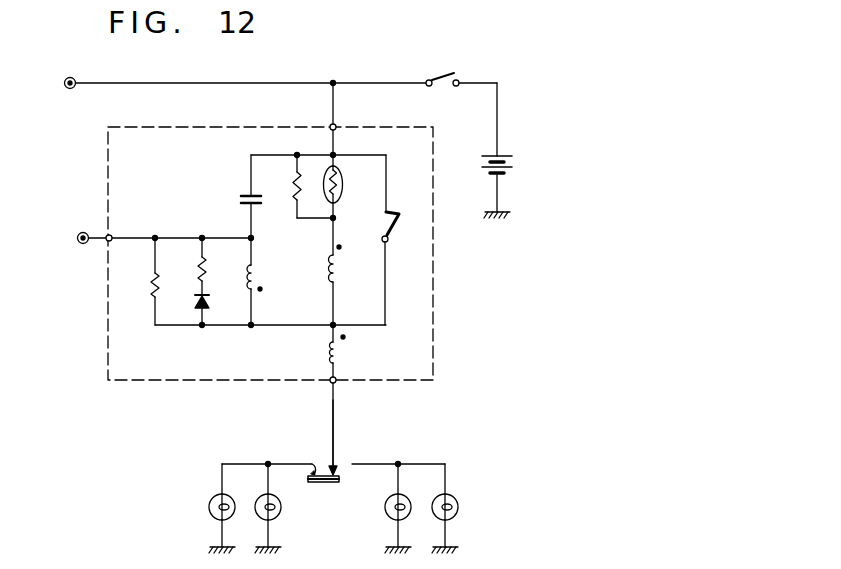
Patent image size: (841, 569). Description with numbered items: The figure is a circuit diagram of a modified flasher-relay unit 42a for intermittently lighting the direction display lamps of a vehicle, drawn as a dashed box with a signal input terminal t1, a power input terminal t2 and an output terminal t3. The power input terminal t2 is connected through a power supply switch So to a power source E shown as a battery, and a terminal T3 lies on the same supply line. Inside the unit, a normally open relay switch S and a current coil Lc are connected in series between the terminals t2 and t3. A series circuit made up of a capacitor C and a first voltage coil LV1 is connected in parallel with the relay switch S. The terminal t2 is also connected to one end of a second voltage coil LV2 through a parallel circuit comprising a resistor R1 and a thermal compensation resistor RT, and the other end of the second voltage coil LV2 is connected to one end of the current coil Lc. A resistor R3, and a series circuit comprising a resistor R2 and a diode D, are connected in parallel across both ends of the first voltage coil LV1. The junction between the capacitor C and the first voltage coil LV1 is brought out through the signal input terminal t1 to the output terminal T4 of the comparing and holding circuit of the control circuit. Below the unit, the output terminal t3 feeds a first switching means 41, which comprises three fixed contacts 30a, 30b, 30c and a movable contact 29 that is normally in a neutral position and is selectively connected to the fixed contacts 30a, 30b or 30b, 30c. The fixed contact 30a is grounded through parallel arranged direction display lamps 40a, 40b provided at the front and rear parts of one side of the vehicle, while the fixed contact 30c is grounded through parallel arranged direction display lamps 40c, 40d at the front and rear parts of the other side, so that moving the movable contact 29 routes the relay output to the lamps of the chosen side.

The terminal T3 is at (231, 85).
The output terminal T4 is at (83, 232).
The signal input terminal t1 is at (170, 229).
The power input terminal t2 is at (342, 117).
The output terminal t3 is at (343, 391).
The power supply switch So is at (461, 69).
The power source E is at (507, 150).
The flasher-relay unit 42a is at (433, 288).
The capacitor C is at (241, 196).
The resistor R1 is at (301, 186).
The thermal compensation resistor RT is at (345, 184).
The resistor R2 is at (217, 266).
The resistor R3 is at (170, 281).
The diode D is at (211, 308).
The first voltage coil LV1 is at (273, 281).
The second voltage coil LV2 is at (350, 263).
The relay switch S is at (395, 240).
The current coil Lc is at (347, 349).
The movable contact 29 is at (323, 490).
The fixed contact 30a is at (274, 458).
The fixed contact 30b is at (335, 463).
The fixed contact 30c is at (352, 468).
The first switching means 41 is at (438, 453).
The direction display lamp 40a is at (211, 512).
The direction display lamp 40b is at (281, 512).
The direction display lamp 40c is at (388, 512).
The direction display lamp 40d is at (456, 512).